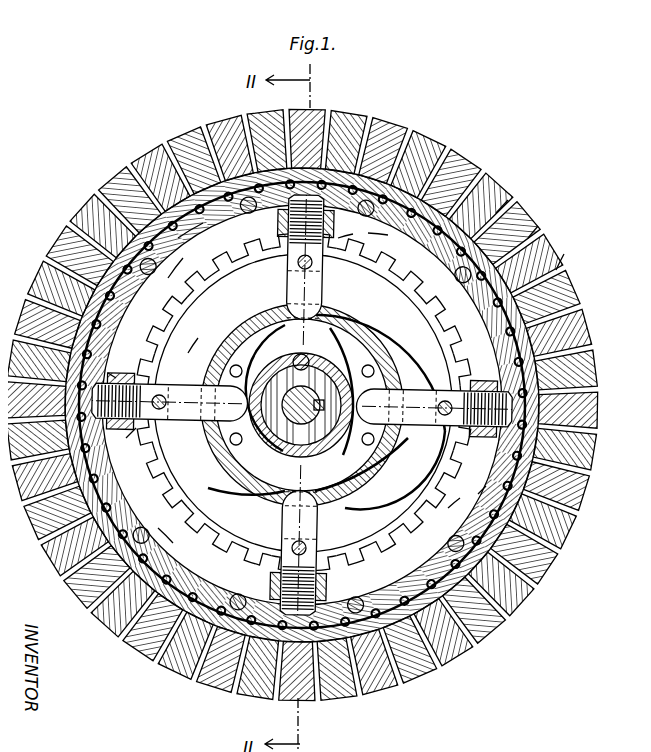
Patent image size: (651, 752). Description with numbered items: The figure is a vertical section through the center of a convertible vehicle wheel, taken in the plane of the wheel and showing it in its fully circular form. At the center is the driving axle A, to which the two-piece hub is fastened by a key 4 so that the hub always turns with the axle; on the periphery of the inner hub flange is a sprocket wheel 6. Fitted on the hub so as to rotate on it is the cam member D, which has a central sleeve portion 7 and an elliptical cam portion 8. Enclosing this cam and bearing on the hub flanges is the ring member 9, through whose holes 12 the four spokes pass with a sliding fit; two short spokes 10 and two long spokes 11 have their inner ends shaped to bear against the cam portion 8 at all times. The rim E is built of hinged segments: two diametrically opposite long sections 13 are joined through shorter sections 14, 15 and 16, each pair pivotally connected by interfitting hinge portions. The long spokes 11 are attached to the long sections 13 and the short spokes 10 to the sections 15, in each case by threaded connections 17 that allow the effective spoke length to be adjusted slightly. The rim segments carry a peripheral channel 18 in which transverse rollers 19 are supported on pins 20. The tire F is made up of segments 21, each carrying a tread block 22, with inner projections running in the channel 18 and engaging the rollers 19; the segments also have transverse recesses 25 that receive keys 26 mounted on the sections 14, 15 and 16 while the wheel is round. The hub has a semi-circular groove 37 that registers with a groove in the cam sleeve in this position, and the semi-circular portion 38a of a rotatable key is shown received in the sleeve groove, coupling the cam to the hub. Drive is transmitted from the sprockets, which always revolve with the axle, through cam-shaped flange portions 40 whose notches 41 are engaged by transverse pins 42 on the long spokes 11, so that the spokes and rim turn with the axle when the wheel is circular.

The key 4 is at (305, 401).
The sprocket wheel 6 is at (165, 528).
The central sleeve portion 7 is at (265, 366).
The elliptical cam portion 8 is at (262, 490).
The ring member 9 is at (362, 470).
The short spokes 10 is at (312, 279).
The long spokes 11 is at (186, 410).
The holes 12 is at (395, 375).
The long rim sections 13 is at (153, 311).
The rim sections 14 is at (178, 272).
The rim sections 15 is at (333, 210).
The rim sections 16 is at (390, 270).
The threaded connections 17 is at (490, 438).
The channel 18 is at (372, 210).
The rollers 19 is at (503, 355).
The pins 20 is at (482, 485).
The tire segments 21 is at (556, 256).
The tread block 22 is at (172, 142).
The recesses 25 is at (200, 205).
The keys 26 is at (240, 205).
The groove 37 is at (352, 325).
The intermediate portion of key 38a is at (283, 300).
The cam-shaped flange portions 40 is at (190, 350).
The notch 41 is at (190, 343).
The transverse pins 42 is at (121, 363).
The driving axle A is at (288, 372).
The cam member D is at (362, 470).
The rim E is at (500, 196).
The tire F is at (528, 220).